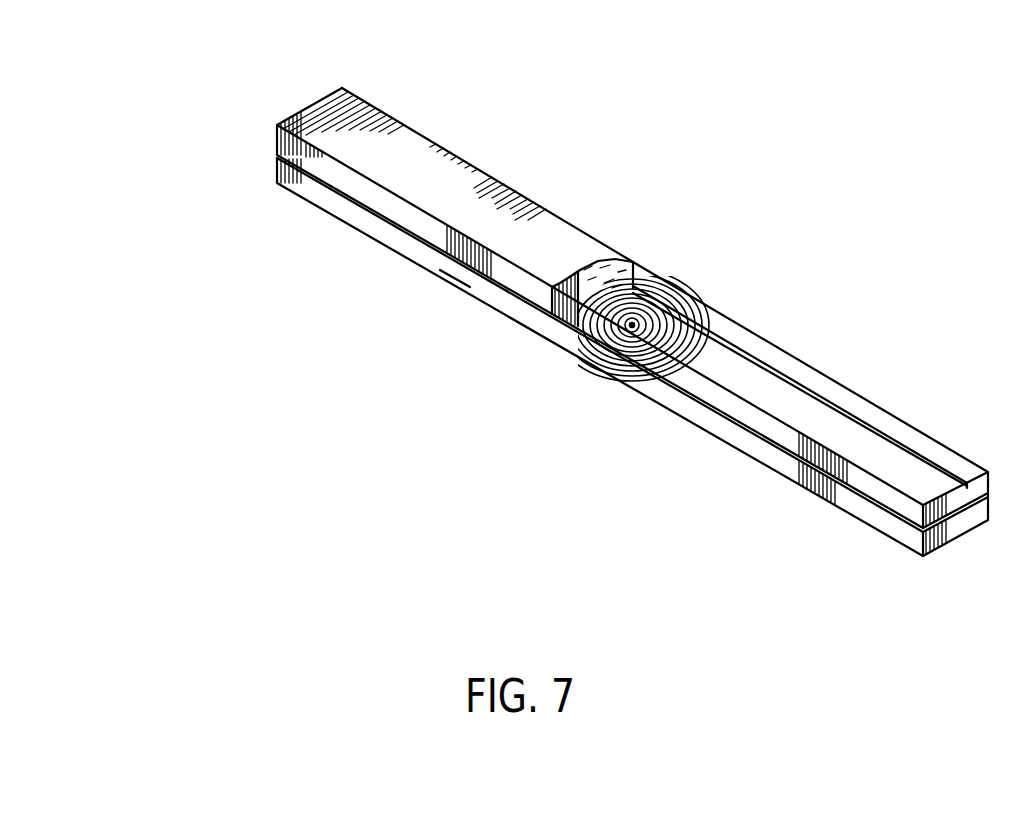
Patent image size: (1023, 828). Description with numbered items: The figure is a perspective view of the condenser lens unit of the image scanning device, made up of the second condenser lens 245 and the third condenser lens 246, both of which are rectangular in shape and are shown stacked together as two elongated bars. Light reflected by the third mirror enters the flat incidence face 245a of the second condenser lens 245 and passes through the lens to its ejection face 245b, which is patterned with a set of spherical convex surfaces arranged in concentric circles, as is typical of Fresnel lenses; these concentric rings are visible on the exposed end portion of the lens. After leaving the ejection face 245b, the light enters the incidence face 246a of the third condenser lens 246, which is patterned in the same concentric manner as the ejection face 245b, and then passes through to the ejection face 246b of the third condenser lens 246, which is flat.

The second condenser lens 245 is at (258, 114).
The incidence face 245a is at (460, 187).
The ejection face 245b is at (687, 380).
The third condenser lens 246 is at (258, 155).
The incidence face 246a is at (784, 408).
The ejection face 246b is at (447, 285).